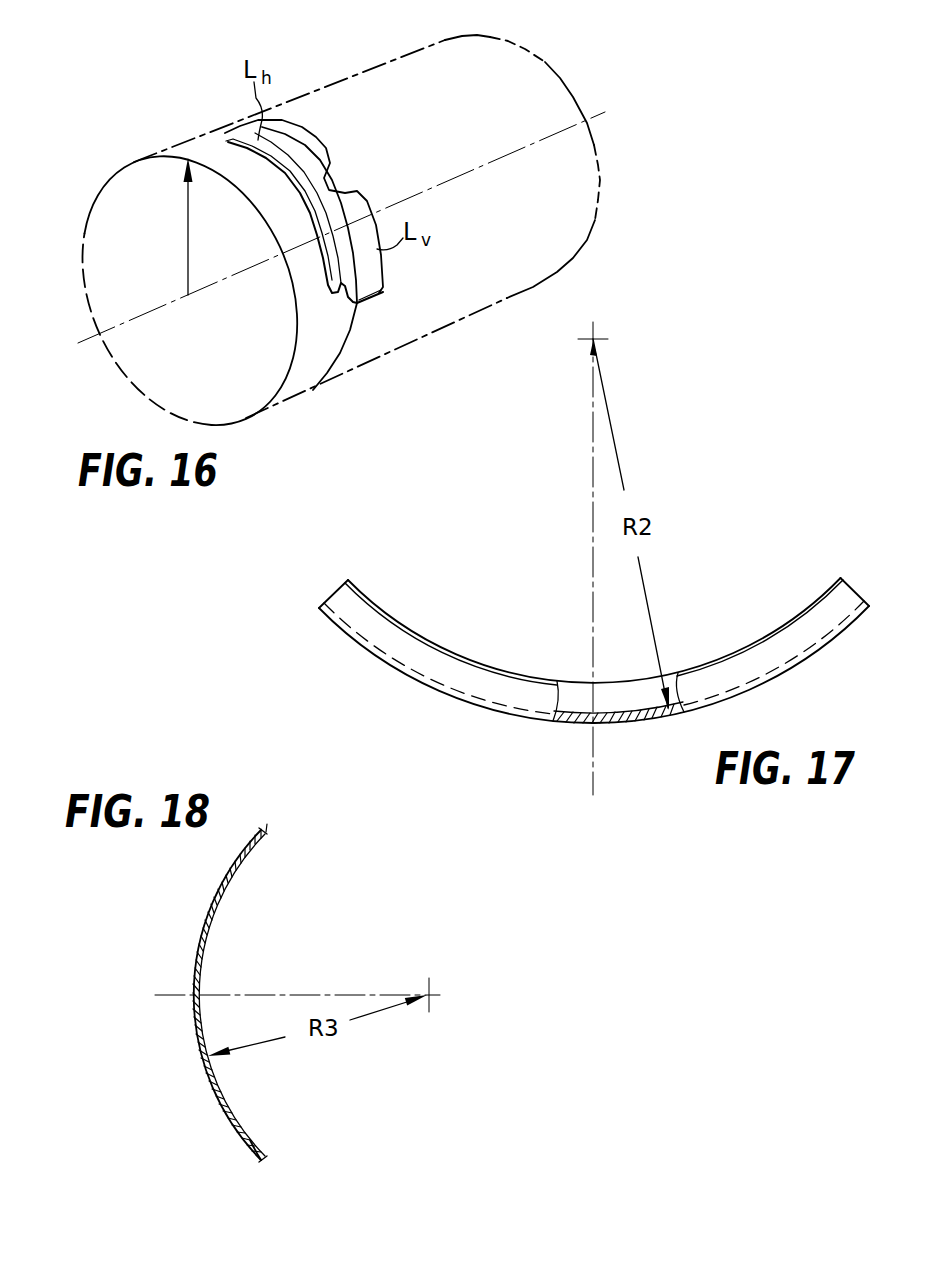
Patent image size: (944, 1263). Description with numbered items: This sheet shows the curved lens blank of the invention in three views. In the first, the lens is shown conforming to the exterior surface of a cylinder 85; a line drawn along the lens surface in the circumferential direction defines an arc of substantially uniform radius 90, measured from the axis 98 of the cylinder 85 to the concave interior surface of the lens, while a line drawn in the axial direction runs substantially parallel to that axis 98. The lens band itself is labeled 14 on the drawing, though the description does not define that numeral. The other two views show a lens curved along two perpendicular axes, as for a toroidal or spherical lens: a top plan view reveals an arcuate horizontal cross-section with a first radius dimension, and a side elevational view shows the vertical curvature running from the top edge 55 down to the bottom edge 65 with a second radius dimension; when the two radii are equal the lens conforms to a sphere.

In FIG. 16, the cylinder 85 is at (388, 62).
In FIG. 16, the band 14 is at (392, 281).
In FIG. 16, the radius 90 is at (188, 254).
In FIG. 16, the axis 98 is at (100, 320).
In FIG. 18, the top edge 55 is at (263, 831).
In FIG. 18, the bottom edge 65 is at (266, 1159).